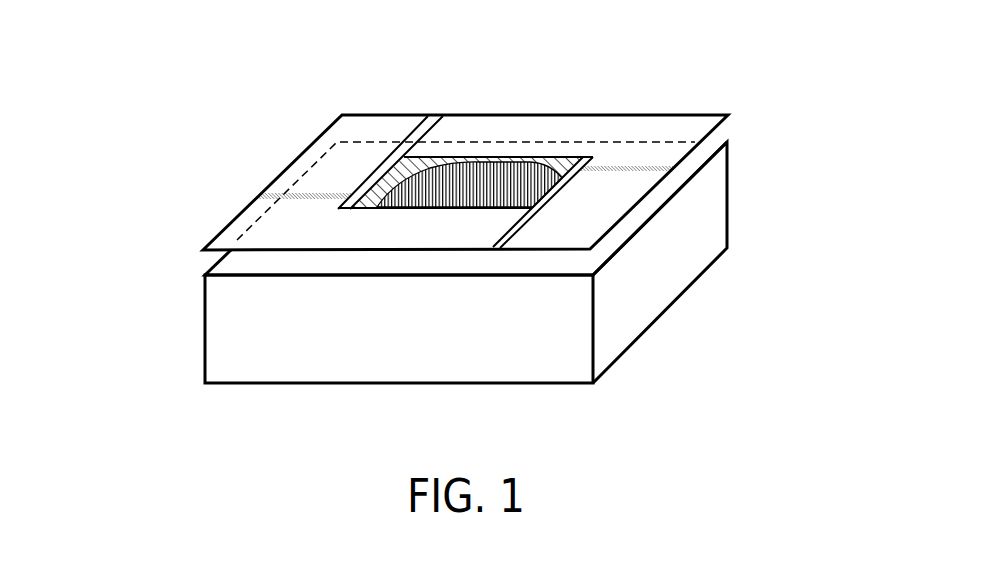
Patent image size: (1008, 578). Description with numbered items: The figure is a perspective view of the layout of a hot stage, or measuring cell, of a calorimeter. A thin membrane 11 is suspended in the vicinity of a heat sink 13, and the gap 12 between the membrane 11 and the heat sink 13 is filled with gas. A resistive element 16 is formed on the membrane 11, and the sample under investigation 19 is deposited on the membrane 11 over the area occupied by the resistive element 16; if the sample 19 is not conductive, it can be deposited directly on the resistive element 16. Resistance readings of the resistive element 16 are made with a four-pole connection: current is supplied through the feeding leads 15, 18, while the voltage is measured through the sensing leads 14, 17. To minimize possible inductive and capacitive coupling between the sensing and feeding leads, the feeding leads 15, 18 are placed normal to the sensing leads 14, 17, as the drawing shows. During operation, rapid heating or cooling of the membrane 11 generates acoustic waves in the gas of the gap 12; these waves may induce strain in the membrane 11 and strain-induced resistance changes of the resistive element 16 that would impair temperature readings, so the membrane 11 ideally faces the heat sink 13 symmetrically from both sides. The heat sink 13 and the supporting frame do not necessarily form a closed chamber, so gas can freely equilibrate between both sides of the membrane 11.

The membrane 11 is at (273, 225).
The gap filled with gas 12 is at (247, 260).
The heat sink 13 is at (243, 328).
The sensing lead 14 is at (305, 196).
The feeding lead 15 is at (423, 138).
The resistive element 16 is at (437, 160).
The sensing lead 17 is at (640, 167).
The feeding lead 18 is at (513, 228).
The sample under investigation 19 is at (497, 183).